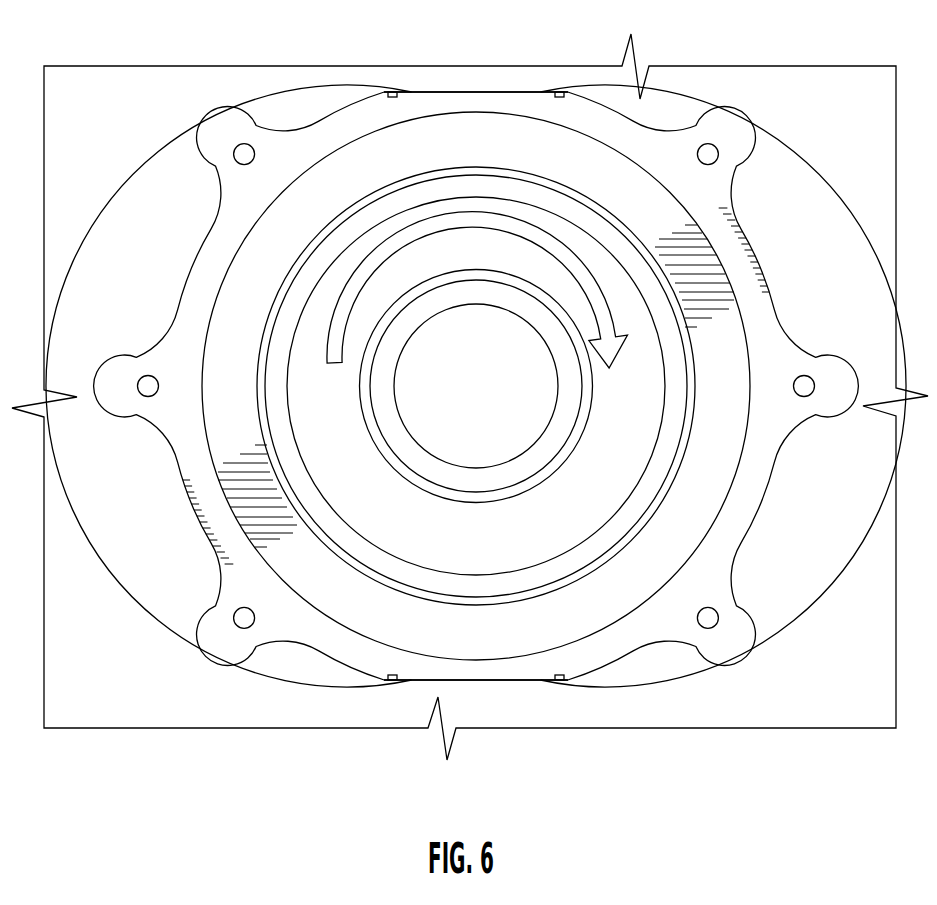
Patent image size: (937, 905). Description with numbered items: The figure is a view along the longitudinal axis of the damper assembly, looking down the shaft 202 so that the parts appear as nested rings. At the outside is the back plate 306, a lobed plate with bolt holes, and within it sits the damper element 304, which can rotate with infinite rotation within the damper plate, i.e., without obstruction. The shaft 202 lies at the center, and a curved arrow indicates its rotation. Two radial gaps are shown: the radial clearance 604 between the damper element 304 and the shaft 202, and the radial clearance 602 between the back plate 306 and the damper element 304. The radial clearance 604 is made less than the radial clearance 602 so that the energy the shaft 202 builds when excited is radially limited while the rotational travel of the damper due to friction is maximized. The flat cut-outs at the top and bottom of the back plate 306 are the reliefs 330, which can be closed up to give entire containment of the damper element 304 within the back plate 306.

The shaft 202 is at (657, 302).
The damper element 304 is at (385, 144).
The back plate 306 is at (769, 302).
The reliefs 330 is at (497, 92).
The radial clearance 602 is at (242, 570).
The radial clearance 604 is at (312, 530).